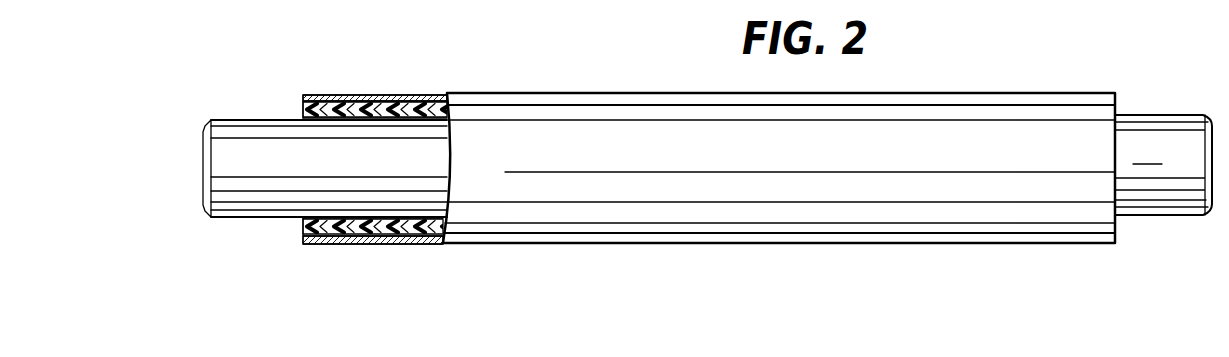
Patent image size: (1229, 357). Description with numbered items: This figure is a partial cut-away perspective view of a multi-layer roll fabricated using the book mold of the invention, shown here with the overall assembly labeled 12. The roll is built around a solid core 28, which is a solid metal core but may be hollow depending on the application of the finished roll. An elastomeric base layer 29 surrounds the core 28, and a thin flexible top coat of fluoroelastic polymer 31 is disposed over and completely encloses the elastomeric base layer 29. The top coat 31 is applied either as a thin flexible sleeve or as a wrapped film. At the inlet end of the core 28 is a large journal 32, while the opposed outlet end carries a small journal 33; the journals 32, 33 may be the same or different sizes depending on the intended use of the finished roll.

The tubular body 12 is at (750, 250).
The solid core 28 is at (378, 203).
The elastomeric base layer 29 is at (407, 93).
The top coat of fluoroelastic polymer 31 is at (353, 93).
The large journal 32 is at (1168, 150).
The small journal 33 is at (216, 176).